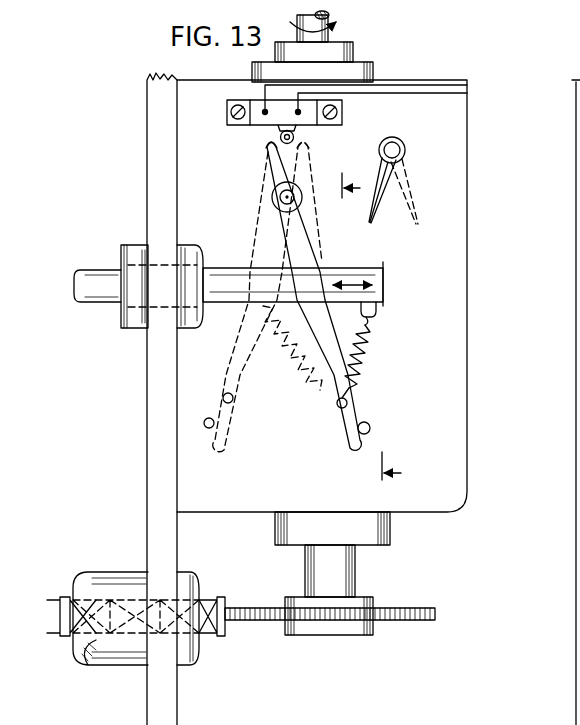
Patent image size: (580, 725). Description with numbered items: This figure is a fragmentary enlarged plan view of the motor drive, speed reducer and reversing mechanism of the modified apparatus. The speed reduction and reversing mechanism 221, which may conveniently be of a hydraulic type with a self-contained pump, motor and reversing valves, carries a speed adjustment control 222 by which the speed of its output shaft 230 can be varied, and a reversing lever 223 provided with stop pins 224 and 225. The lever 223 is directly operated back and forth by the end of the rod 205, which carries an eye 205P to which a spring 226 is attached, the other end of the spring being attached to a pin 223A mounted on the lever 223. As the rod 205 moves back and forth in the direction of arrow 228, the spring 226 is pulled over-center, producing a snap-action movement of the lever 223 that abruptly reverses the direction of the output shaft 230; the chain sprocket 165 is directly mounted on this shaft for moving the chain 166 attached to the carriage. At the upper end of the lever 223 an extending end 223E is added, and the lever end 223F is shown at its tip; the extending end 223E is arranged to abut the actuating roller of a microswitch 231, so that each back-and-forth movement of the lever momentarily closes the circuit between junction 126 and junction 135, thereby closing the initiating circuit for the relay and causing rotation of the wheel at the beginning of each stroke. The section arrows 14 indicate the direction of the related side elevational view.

The section line 14- 14 is at (376, 322).
The junction 126 is at (467, 80).
The junction 135 is at (467, 93).
The chain sprocket 165 is at (261, 621).
The chain 166 is at (210, 634).
The rod 205 is at (337, 267).
The eye 205P is at (376, 314).
The speed reduction and reversing mechanism 221 is at (442, 302).
The speed adjustment control 222 is at (383, 198).
The reversing lever 223 is at (326, 346).
The pin 223A is at (338, 408).
The extending end 223E is at (309, 152).
The lever end 223F is at (270, 158).
The stop pin 224 is at (370, 432).
The stop pin 225 is at (212, 446).
The spring 226 is at (358, 370).
The arrow 228 is at (384, 273).
The output shaft 230 is at (279, 136).
The microswitch 231 is at (254, 98).